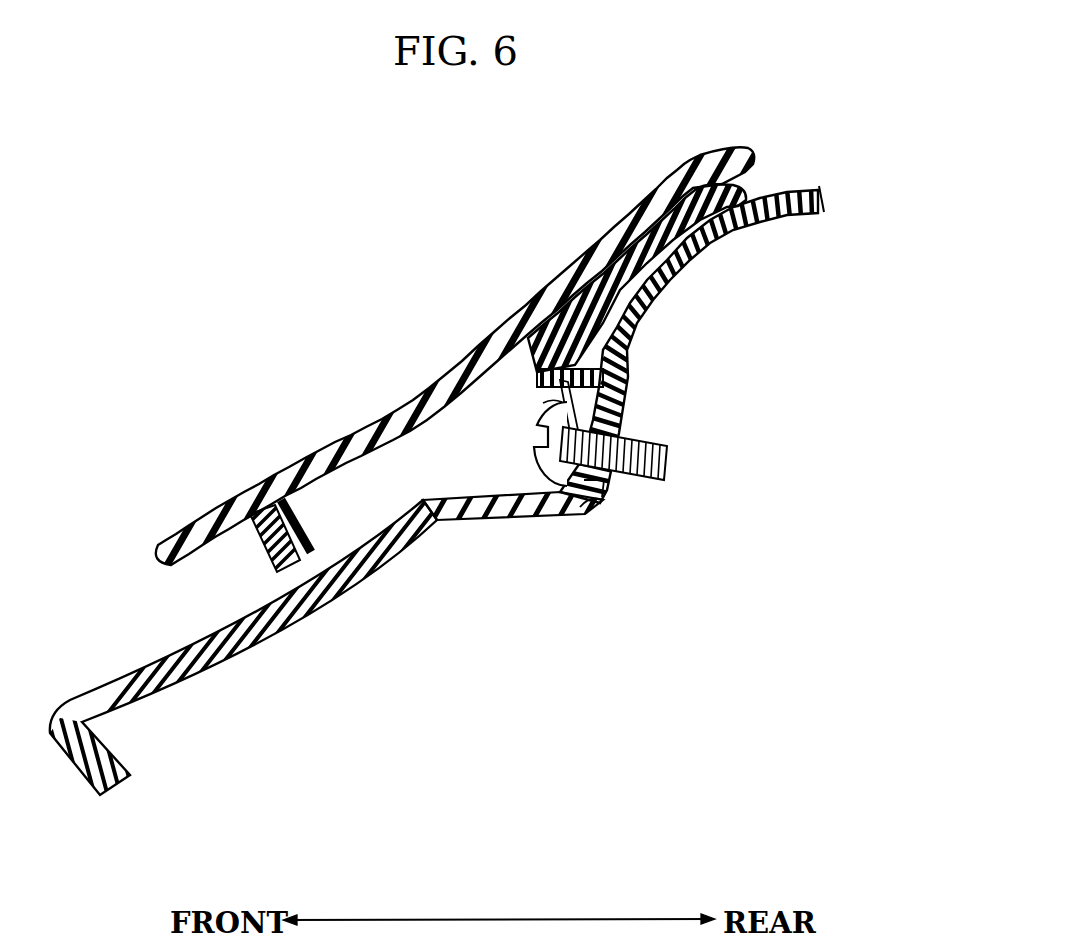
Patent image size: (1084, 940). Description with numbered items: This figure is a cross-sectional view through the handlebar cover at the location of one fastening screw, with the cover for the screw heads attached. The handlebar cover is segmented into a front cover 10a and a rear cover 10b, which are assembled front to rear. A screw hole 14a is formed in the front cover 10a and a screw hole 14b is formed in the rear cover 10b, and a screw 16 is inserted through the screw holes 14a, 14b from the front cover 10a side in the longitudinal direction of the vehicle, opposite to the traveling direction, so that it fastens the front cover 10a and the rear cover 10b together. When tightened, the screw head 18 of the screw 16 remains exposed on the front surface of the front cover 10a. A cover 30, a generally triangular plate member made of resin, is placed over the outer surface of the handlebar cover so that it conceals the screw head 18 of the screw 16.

The front cover 10a is at (753, 190).
The rear cover 10b is at (822, 196).
The screw hole 14a is at (557, 452).
The screw hole 14b is at (590, 467).
The screw 16 is at (547, 408).
The screw head 18 is at (566, 402).
The cover 30 is at (452, 372).